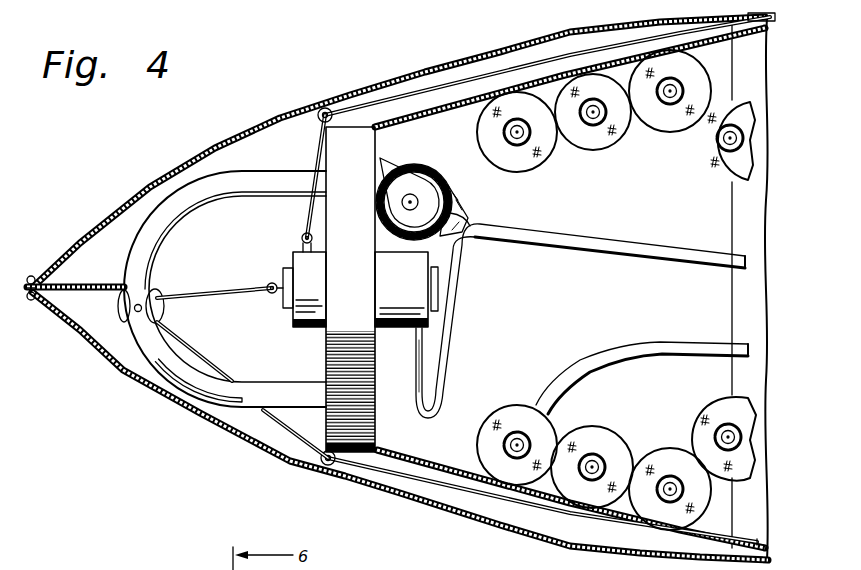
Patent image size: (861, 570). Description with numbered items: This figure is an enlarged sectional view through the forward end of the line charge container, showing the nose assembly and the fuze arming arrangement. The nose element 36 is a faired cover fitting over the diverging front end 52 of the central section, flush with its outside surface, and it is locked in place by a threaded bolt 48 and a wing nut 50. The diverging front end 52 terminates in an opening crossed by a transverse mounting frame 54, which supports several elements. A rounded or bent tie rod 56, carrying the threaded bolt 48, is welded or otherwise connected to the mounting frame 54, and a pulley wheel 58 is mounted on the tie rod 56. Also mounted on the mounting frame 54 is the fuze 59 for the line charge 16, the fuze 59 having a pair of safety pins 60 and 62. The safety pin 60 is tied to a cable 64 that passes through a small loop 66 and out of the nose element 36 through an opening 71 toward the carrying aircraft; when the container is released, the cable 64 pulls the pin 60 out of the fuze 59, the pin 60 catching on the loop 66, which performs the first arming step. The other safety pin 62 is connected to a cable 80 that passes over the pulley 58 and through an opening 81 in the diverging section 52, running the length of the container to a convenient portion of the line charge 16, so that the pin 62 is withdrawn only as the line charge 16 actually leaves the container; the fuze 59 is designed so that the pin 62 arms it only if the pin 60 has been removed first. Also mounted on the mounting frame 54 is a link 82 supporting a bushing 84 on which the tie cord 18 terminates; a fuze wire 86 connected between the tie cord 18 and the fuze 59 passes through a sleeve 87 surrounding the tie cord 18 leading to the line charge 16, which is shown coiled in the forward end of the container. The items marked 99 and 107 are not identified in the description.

The line charge 16 is at (593, 150).
The tie cord 18 is at (467, 217).
The nose element 36 is at (227, 437).
The threaded bolt 48 is at (99, 282).
The wing nut 50 is at (35, 302).
The diverging front end 52 is at (462, 84).
The transverse mounting frame 54 is at (360, 128).
The tie rod 56 is at (231, 171).
The pulley wheel 58 is at (163, 313).
The fuze 59 is at (310, 328).
The safety pin 60 is at (300, 236).
The safety pin 62 is at (267, 283).
The cable 64 is at (575, 53).
The small loop 66 is at (320, 110).
The opening 71 is at (710, 16).
The cable 80 is at (201, 290).
The opening 81 is at (697, 537).
The link 82 is at (387, 160).
The bushing 84 is at (448, 192).
The fuze wire 86 is at (462, 275).
The sleeve 87 is at (642, 247).
The section reference 99 is at (98, 569).
The section reference 107 is at (188, 561).